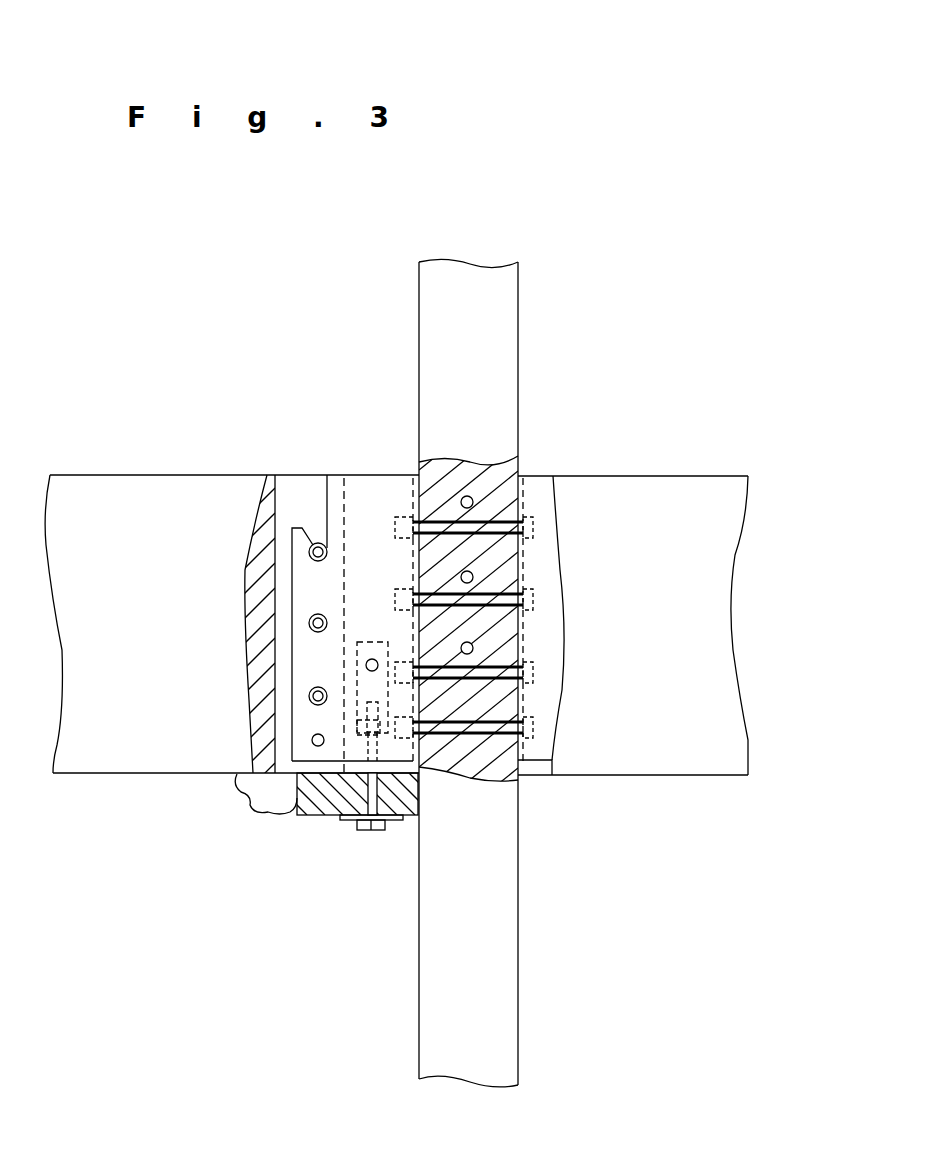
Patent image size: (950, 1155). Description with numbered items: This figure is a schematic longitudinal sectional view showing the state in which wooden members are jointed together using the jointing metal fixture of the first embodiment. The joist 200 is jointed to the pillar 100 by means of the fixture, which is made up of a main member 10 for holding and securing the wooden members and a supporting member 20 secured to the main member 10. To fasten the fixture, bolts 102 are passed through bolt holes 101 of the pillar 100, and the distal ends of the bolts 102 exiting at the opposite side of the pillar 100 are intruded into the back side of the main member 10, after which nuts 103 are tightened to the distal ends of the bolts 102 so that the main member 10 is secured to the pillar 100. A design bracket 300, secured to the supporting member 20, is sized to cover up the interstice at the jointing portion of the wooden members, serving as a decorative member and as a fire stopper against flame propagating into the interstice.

The pillar 100 is at (518, 276).
The bolt holes 101 is at (526, 522).
The bolts 102 is at (476, 520).
The nuts 103 is at (407, 518).
The main member 10 is at (347, 508).
The supporting member 20 is at (337, 852).
The joist 200 is at (101, 765).
The design bracket 300 is at (268, 803).